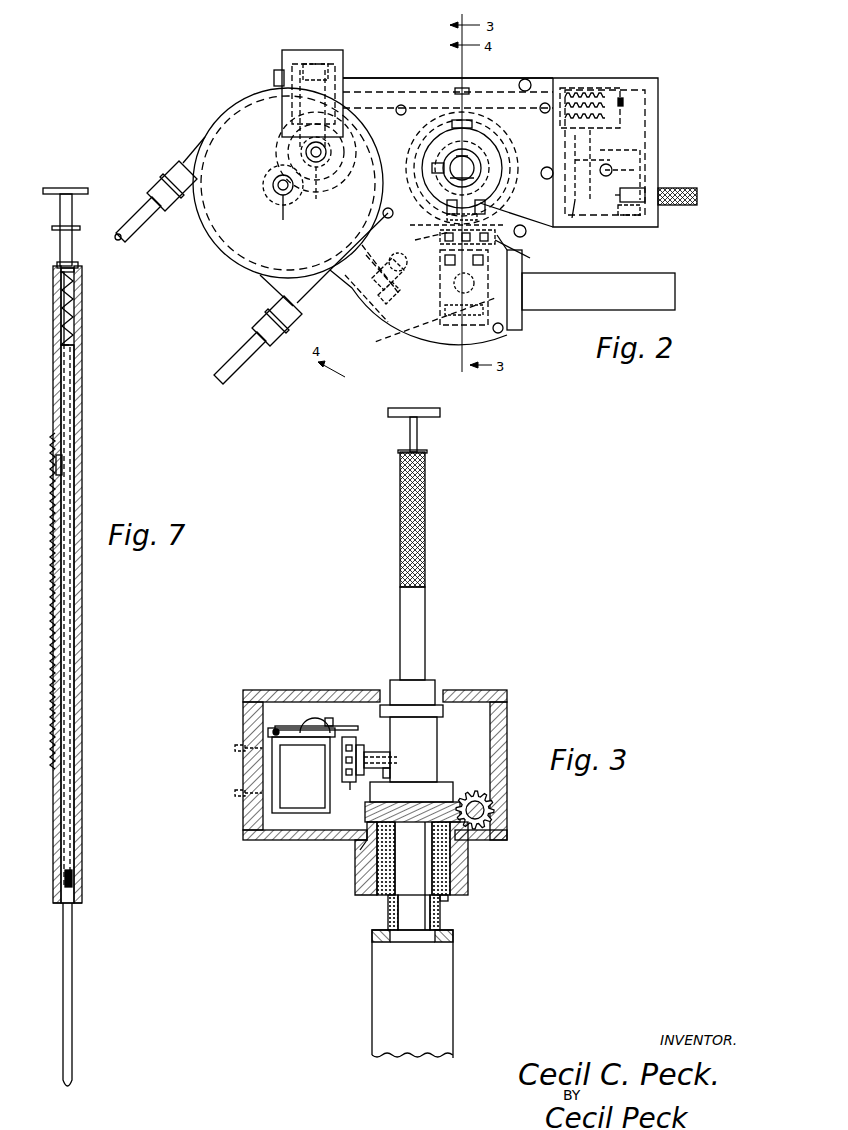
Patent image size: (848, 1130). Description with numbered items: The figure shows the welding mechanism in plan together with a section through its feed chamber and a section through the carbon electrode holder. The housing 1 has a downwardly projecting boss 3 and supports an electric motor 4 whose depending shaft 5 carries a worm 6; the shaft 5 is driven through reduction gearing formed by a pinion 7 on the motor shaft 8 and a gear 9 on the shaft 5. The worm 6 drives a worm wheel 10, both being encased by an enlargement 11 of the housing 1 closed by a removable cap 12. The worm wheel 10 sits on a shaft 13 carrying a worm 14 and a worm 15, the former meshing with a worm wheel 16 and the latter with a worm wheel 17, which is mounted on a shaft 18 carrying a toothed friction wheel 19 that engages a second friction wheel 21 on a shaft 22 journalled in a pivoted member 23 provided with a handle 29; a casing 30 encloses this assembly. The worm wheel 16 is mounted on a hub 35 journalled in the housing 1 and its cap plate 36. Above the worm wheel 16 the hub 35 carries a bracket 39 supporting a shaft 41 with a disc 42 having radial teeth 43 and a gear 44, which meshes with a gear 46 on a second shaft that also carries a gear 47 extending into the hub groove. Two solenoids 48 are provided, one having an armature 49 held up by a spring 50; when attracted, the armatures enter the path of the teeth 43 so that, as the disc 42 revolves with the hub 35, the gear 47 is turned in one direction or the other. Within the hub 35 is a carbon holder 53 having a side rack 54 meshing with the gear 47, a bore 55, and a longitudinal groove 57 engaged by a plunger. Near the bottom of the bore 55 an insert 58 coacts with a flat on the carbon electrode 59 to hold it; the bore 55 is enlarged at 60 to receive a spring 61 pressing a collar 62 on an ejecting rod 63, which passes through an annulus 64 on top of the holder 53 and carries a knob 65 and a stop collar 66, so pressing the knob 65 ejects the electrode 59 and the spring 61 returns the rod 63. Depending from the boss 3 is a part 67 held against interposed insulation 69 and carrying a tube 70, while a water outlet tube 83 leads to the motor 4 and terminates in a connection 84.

In FIG. 2, the housing 1 is at (395, 78).
In FIG. 3, the housing 1 is at (507, 722).
In FIG. 3, the boss 3 is at (468, 865).
In FIG. 2, the electric motor 4 is at (236, 248).
In FIG. 2, the shaft 5 is at (306, 153).
In FIG. 2, the worm 6 is at (318, 200).
In FIG. 2, the pinion 7 is at (283, 218).
In FIG. 2, the motor shaft 8 is at (278, 190).
In FIG. 2, the gear 9 is at (333, 180).
In FIG. 2, the worm wheel 10 is at (320, 80).
In FIG. 2, the enlargement 11 is at (313, 50).
In FIG. 2, the removable cap 12 is at (274, 79).
In FIG. 2, the shaft 13 is at (385, 105).
In FIG. 3, the shaft 13 is at (492, 800).
In FIG. 2, the worm 14 is at (470, 88).
In FIG. 3, the worm 14 is at (494, 812).
In FIG. 2, the worm 15 is at (620, 100).
In FIG. 2, the worm wheel 16 is at (570, 215).
In FIG. 3, the worm wheel 16 is at (355, 850).
In FIG. 2, the worm wheel 17 is at (623, 100).
In FIG. 2, the shaft 18 is at (592, 160).
In FIG. 2, the friction wheel 19 is at (600, 175).
In FIG. 2, the friction wheel 21 is at (612, 173).
In FIG. 2, the shaft 22 is at (625, 200).
In FIG. 2, the member 23 is at (640, 208).
In FIG. 2, the handle 29 is at (697, 192).
In FIG. 2, the casing 30 is at (658, 140).
In FIG. 3, the hub 35 is at (437, 740).
In FIG. 2, the cap plate 36 is at (545, 78).
In FIG. 3, the cap plate 36 is at (488, 690).
In FIG. 3, the bracket 39 is at (378, 778).
In FIG. 3, the shaft 41 is at (369, 747).
In FIG. 2, the disc 42 is at (490, 232).
In FIG. 3, the disc 42 is at (355, 740).
In FIG. 2, the teeth 43 is at (523, 258).
In FIG. 3, the teeth 43 is at (348, 790).
In FIG. 2, the gear 44 is at (470, 198).
In FIG. 3, the gear 44 is at (385, 752).
In FIG. 2, the gear 46 is at (447, 205).
In FIG. 2, the gear 47 is at (432, 168).
In FIG. 2, the solenoids 48 is at (395, 278).
In FIG. 3, the solenoids 48 is at (301, 770).
In FIG. 3, the armature 49 is at (345, 726).
In FIG. 3, the spring 50 is at (310, 722).
In FIG. 3, the carbon holder 53 is at (415, 612).
In FIG. 7, the carbon holder 53 is at (78, 655).
In FIG. 3, the side rack 54 is at (388, 915).
In FIG. 7, the side rack 54 is at (52, 680).
In FIG. 7, the bore 55 is at (82, 692).
In FIG. 7, the longitudinal groove 57 is at (62, 465).
In FIG. 7, the insert 58 is at (72, 883).
In FIG. 7, the carbon electrode 59 is at (72, 990).
In FIG. 7, the enlargement 60 is at (73, 317).
In FIG. 7, the spring 61 is at (61, 298).
In FIG. 7, the collar 62 is at (74, 272).
In FIG. 3, the ejecting rod 63 is at (410, 437).
In FIG. 7, the ejecting rod 63 is at (70, 370).
In FIG. 7, the annulus 64 is at (57, 264).
In FIG. 3, the knob 65 is at (440, 412).
In FIG. 7, the knob 65 is at (82, 188).
In FIG. 3, the stop collar 66 is at (427, 452).
In FIG. 7, the stop collar 66 is at (52, 228).
In FIG. 3, the part 67 is at (440, 920).
In FIG. 3, the insulation 69 is at (448, 900).
In FIG. 3, the tube 70 is at (447, 963).
In FIG. 2, the water outlet tube 83 is at (232, 352).
In FIG. 2, the connection 84 is at (150, 195).